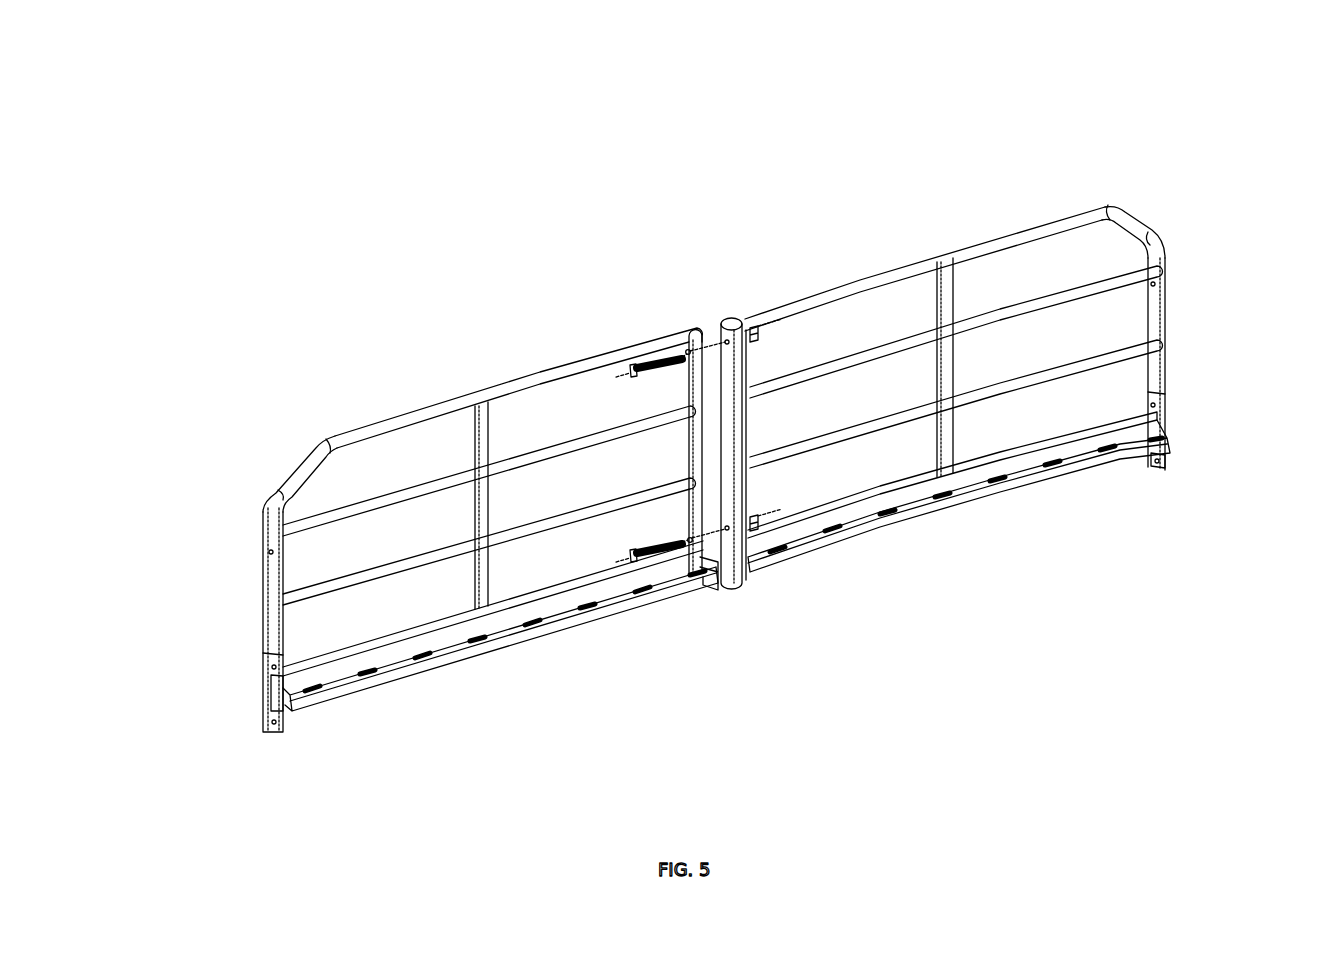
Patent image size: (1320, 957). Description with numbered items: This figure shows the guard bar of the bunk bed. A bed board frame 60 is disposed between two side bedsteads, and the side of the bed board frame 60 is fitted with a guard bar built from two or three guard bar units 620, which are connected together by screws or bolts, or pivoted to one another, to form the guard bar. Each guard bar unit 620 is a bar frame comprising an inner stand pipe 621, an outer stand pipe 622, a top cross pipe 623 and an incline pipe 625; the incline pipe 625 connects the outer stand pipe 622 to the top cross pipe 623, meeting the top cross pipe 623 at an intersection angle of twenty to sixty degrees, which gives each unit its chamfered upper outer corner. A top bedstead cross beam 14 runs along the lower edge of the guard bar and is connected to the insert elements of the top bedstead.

The bed board frame 60 is at (683, 92).
The guard bar unit 620 is at (512, 376).
The inner stand pipe 621 is at (692, 442).
The outer stand pipe 622 is at (272, 597).
The top cross pipe 623 is at (398, 427).
The incline pipe 625 is at (292, 473).
The top bedstead cross beam 14 is at (445, 663).